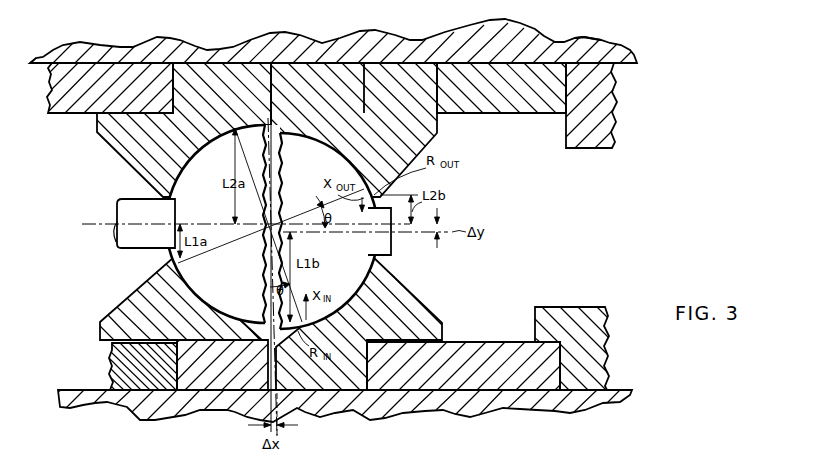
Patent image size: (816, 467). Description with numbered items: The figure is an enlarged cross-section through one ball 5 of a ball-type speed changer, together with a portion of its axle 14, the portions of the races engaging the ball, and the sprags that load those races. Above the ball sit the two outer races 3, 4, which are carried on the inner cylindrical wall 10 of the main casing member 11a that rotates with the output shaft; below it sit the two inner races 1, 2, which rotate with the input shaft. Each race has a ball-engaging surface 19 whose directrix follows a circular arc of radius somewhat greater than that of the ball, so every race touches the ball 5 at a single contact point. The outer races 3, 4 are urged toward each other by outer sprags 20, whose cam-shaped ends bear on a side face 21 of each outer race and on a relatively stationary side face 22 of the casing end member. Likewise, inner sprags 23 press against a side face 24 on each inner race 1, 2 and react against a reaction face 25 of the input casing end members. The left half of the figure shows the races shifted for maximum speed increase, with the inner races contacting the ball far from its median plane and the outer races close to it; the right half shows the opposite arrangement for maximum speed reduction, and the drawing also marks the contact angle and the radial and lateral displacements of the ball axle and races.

The inner race 1 is at (181, 298).
The inner race 2 is at (359, 322).
The outer race 3 is at (184, 130).
The outer race 4 is at (354, 130).
The ball 5 is at (272, 227).
The inner cylindrical wall 10 is at (319, 63).
The main casing member 11a is at (584, 50).
The shaft 14 is at (144, 223).
The ball-engaging surface 19 is at (181, 176).
The outer sprag 20 is at (306, 88).
The side face 21 is at (173, 85).
The side face 22 is at (564, 113).
The inner sprag 23 is at (334, 366).
The side face 24 is at (178, 360).
The reaction face 25 is at (560, 367).